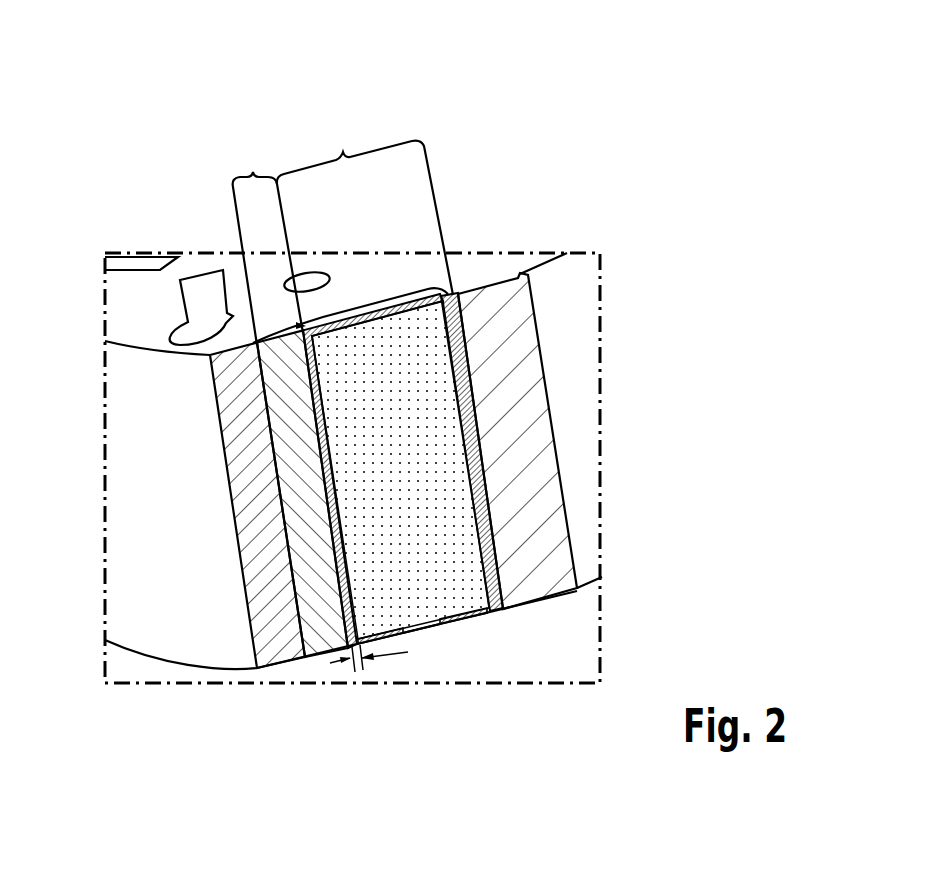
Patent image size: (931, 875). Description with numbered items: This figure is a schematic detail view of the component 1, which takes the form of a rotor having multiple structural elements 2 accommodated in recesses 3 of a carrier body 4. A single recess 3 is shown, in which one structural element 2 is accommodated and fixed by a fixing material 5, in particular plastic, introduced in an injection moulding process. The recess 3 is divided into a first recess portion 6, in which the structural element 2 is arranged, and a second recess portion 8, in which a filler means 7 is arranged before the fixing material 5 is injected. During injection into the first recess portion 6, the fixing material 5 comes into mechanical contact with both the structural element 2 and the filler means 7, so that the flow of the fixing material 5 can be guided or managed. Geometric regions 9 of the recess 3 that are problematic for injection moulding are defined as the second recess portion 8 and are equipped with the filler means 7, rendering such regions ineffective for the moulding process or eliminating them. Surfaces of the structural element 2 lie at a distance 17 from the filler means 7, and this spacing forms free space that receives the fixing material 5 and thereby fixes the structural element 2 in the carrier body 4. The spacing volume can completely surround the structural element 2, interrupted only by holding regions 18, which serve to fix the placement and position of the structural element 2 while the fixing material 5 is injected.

The component 1 is at (533, 190).
The structural element 2 is at (437, 410).
The recess 3 is at (363, 311).
The carrier body 4 is at (543, 450).
The fixing material 5 is at (493, 613).
The first recess portion 6 is at (345, 148).
The filler means 7 is at (312, 640).
The second recess portion 8 is at (252, 170).
The geometric region 9 is at (272, 648).
The distance 17 is at (395, 653).
The holding region 18 is at (425, 632).